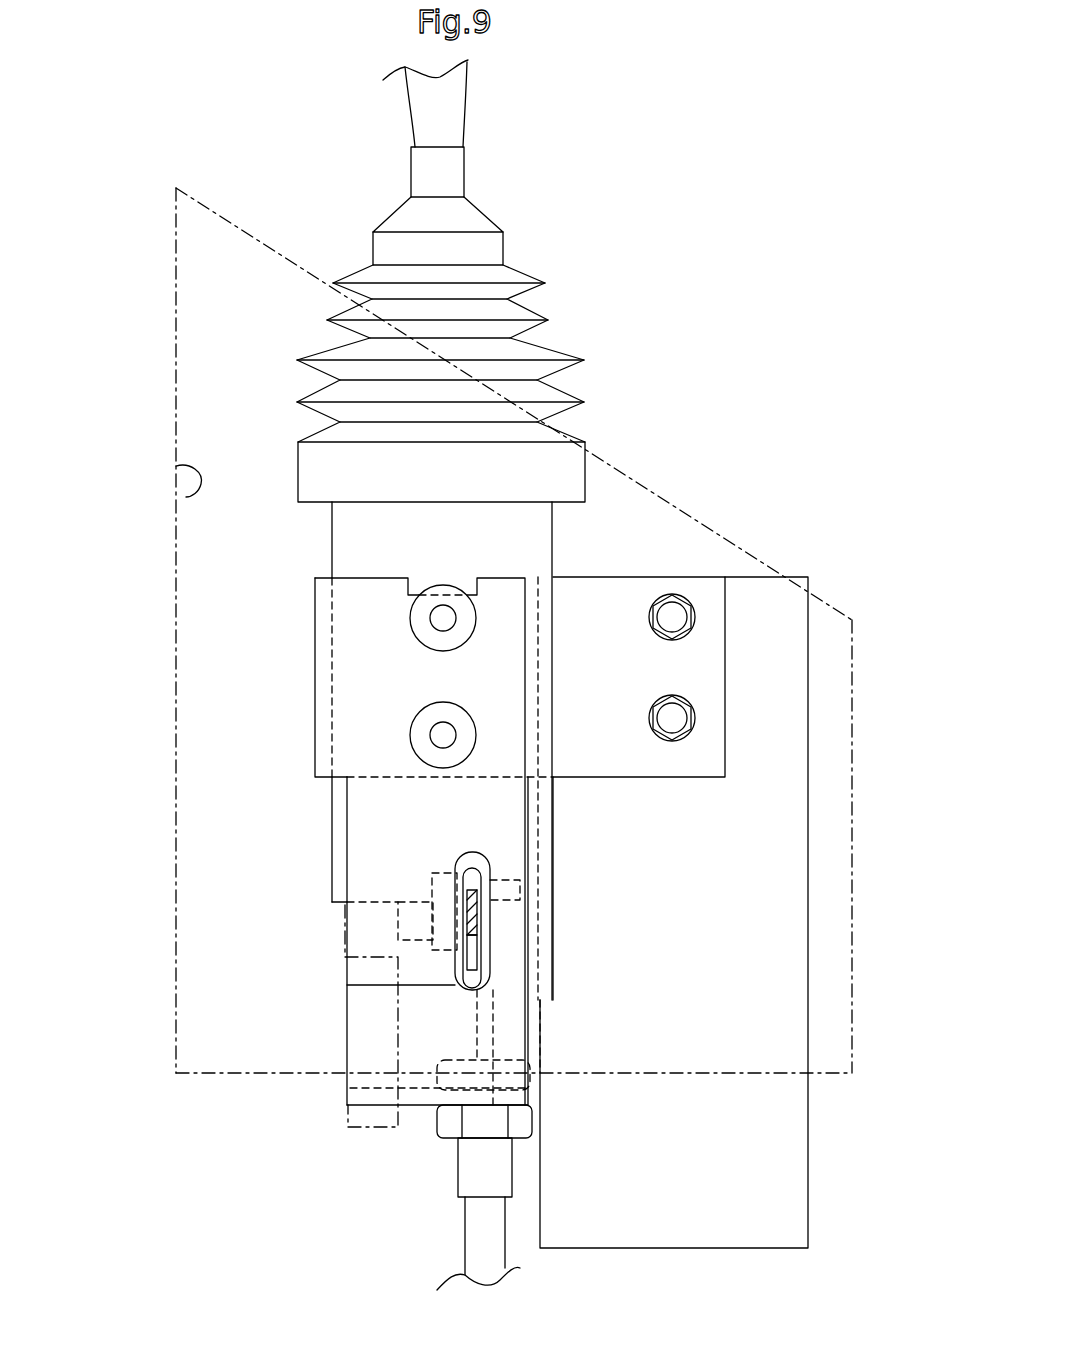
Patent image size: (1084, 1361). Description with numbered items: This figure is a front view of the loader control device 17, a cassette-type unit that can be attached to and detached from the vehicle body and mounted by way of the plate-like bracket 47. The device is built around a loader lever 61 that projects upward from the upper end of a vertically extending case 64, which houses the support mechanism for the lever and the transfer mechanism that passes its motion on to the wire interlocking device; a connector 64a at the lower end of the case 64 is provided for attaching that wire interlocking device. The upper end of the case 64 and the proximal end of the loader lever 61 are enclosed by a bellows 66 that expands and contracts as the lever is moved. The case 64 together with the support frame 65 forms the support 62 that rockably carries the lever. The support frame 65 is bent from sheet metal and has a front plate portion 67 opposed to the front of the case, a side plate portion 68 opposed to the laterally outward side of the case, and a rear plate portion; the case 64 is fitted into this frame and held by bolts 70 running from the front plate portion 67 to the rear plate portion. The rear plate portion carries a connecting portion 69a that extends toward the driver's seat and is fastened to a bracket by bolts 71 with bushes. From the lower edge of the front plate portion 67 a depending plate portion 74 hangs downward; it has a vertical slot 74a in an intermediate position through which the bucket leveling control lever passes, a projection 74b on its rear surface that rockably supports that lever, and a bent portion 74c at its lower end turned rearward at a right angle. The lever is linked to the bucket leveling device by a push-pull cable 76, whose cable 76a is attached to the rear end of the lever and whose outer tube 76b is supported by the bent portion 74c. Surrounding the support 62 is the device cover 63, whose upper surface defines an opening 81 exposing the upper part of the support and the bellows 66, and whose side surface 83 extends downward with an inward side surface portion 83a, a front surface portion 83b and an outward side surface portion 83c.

The loader control device 17 is at (732, 203).
The loader lever 61 is at (448, 135).
The bellows 66 is at (513, 311).
The case 64 is at (530, 558).
The side plate portion 68 is at (311, 647).
The front plate portion 67 is at (355, 717).
The bolts 70 is at (445, 735).
The connecting portion 69a is at (627, 763).
The support frame 65 is at (590, 610).
The bolts 71 is at (676, 720).
The support 62 is at (765, 465).
The opening 81 is at (667, 500).
The side surface 83 is at (179, 970).
The inward side surface portion 83a is at (853, 880).
The front surface portion 83b is at (190, 493).
The outward side surface portion 83c is at (178, 810).
The device cover 63 is at (163, 594).
The depending plate portion 74 is at (363, 868).
The slot 74a is at (460, 984).
The projection 74b is at (405, 943).
The bent portion 74c is at (420, 1108).
The connector 64a is at (543, 980).
The cable 76a is at (500, 1023).
The outer tube 76b is at (500, 1172).
The push-pull cable 76 is at (638, 1120).
The bracket 47 is at (812, 1148).